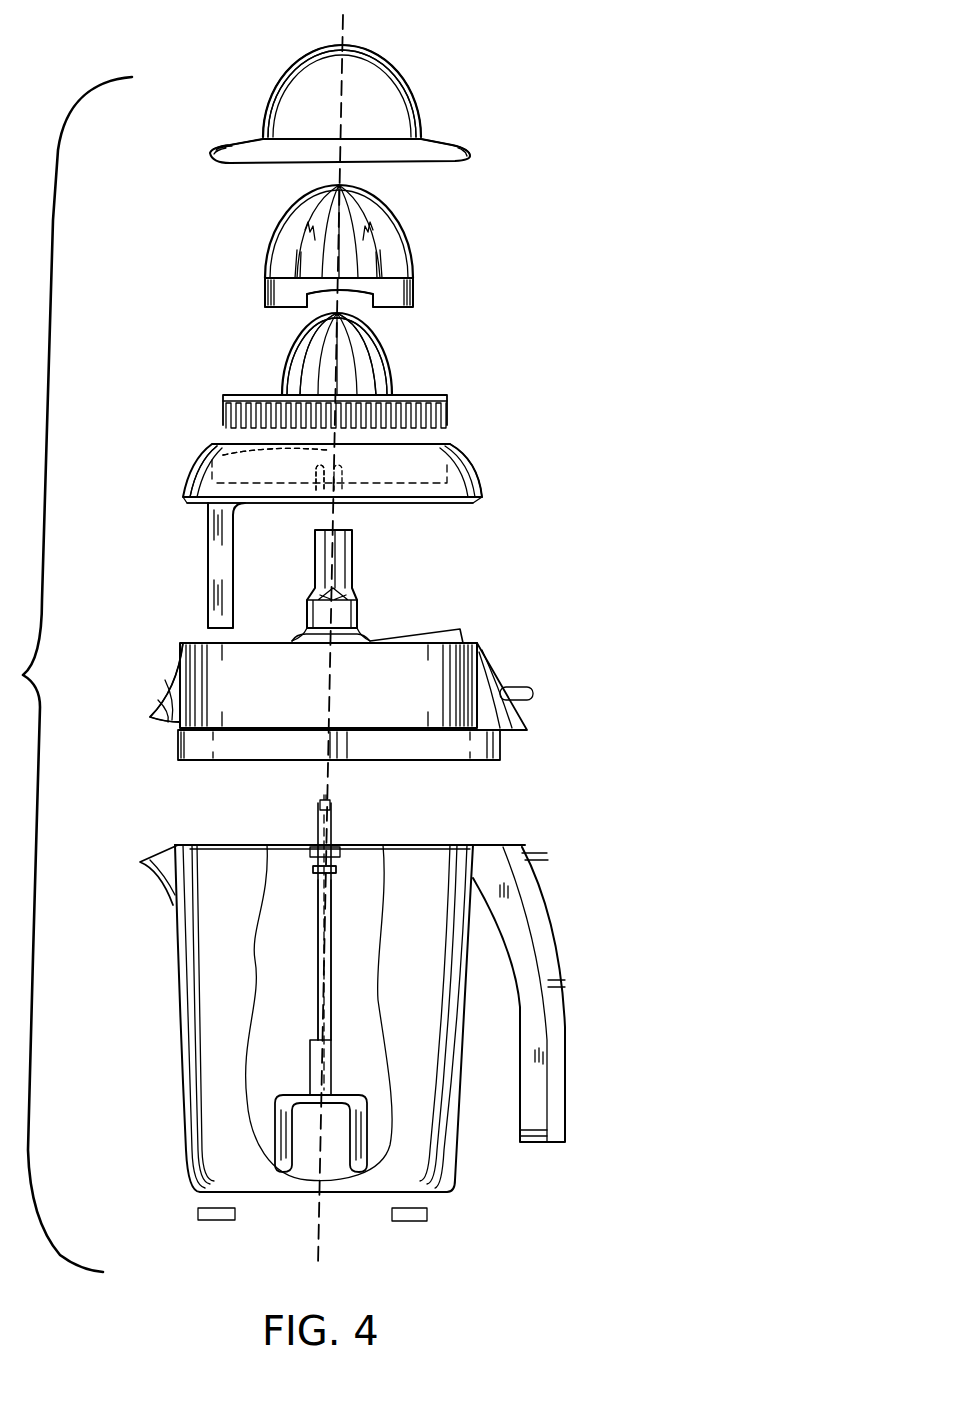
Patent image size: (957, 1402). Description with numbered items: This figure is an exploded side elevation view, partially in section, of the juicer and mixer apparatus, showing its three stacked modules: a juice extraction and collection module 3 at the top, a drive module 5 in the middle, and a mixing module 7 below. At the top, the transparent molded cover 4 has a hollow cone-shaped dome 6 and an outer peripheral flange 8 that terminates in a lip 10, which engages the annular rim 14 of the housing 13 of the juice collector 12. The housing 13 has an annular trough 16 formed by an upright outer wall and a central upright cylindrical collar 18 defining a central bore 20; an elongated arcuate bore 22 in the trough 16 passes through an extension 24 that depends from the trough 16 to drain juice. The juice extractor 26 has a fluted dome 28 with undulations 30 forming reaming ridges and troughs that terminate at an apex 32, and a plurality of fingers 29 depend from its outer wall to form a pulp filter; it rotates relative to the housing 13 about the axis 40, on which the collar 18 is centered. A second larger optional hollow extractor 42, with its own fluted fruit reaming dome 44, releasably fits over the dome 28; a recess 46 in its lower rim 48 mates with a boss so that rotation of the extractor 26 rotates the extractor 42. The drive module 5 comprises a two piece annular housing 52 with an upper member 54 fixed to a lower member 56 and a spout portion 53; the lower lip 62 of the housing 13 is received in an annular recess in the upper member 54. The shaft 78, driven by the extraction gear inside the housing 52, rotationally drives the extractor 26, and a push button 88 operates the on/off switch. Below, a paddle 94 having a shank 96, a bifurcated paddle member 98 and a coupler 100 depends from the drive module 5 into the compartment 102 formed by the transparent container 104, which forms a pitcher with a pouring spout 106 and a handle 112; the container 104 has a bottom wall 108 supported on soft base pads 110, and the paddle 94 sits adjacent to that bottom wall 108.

The juice extraction and collection module 3 is at (394, 306).
The cover 4 is at (317, 64).
The drive module 5 is at (344, 685).
The dome 6 is at (412, 76).
The mixing module 7 is at (367, 1024).
The outer peripheral flange 8 is at (457, 160).
The lip 10 is at (258, 163).
The juice collector 12 is at (440, 473).
The housing 13 is at (460, 452).
The annular rim 14 is at (453, 445).
The annular trough 16 is at (196, 462).
The central upright cylindrical collar 18 is at (300, 503).
The central bore 20 is at (212, 445).
The elongated arcuate bore 22 is at (208, 531).
The extension 24 is at (208, 590).
The juice extractor 26 is at (392, 348).
The fluted dome 28 is at (388, 360).
The fingers 29 is at (447, 404).
The undulations 30 is at (295, 368).
The apex 32 is at (307, 320).
The axis 40 is at (353, 58).
The second larger extractor 42 is at (410, 217).
The fluted fruit reaming dome 44 is at (413, 258).
The recess 46 is at (388, 297).
The lower rim 48 is at (265, 284).
The annular housing 52 is at (477, 643).
The spout portion 53 is at (148, 716).
The upper member 54 is at (483, 653).
The lower member 56 is at (500, 745).
The lower lip 62 is at (433, 503).
The shaft 78 is at (343, 565).
The push button 88 is at (533, 693).
The paddle 94 is at (345, 952).
The shank 96 is at (317, 972).
The bifurcated paddle member 98 is at (357, 1100).
The coupler 100 is at (318, 828).
The compartment 102 is at (358, 853).
The container 104 is at (183, 973).
The pouring spout 106 is at (145, 860).
The bottom wall 108 is at (265, 1185).
The base pads 110 is at (197, 1213).
The handle 112 is at (545, 1037).